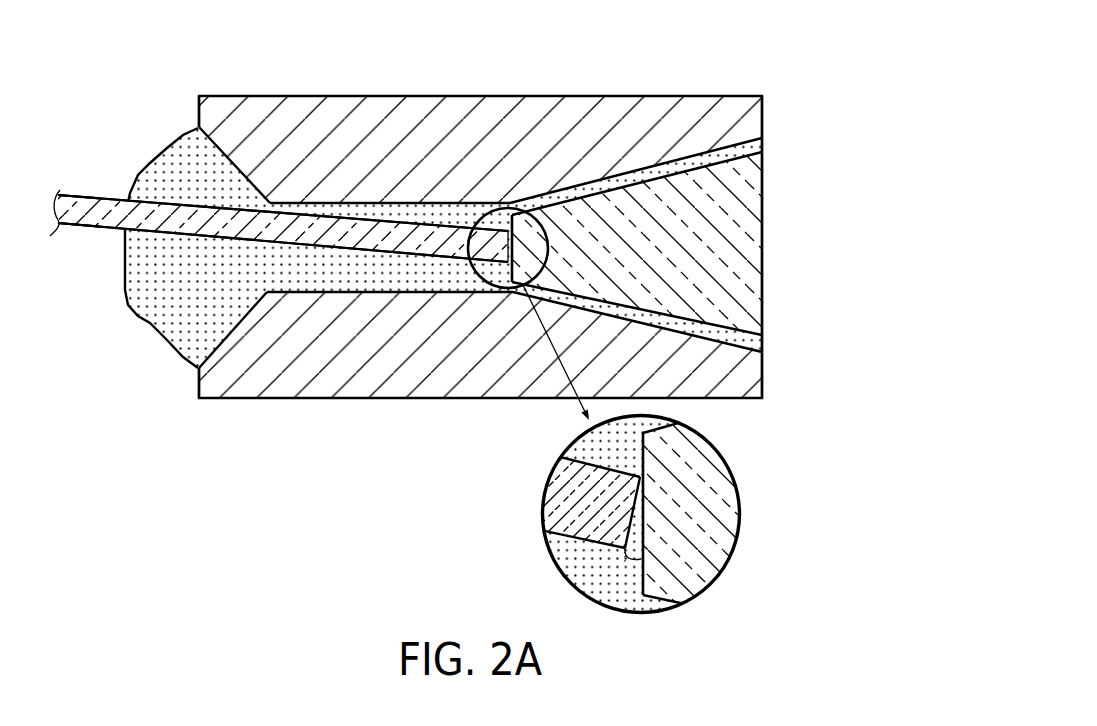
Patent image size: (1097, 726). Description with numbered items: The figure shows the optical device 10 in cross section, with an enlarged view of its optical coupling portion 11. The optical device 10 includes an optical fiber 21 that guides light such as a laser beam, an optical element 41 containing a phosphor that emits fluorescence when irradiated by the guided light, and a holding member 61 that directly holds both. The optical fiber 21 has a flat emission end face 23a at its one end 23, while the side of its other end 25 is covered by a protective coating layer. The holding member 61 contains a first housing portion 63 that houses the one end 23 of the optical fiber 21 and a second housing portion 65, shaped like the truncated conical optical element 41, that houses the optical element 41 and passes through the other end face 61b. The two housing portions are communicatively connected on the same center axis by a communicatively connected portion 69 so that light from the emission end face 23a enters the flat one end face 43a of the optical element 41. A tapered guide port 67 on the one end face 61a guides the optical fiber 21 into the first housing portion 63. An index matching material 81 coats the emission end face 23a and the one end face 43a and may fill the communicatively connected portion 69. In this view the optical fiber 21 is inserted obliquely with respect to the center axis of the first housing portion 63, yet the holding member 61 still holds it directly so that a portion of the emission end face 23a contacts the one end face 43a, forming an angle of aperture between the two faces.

The optical device 10 is at (440, 72).
The optical coupling portion 11 is at (533, 461).
The optical fiber 21 is at (226, 261).
The one end of the optical fiber 23 is at (450, 240).
The emission end face 23a is at (505, 262).
The other end of the optical fiber 25 is at (80, 200).
The optical element 41 is at (698, 262).
The one end face of the optical element 43a is at (512, 282).
The holding member 61 is at (575, 142).
The one end face of the holding member 61a is at (197, 108).
The other end face of the holding member 61b is at (762, 118).
The first housing portion 63 is at (341, 203).
The second housing portion 65 is at (684, 160).
The guide port 67 is at (256, 160).
The communicatively connected portion 69 is at (505, 196).
The index matching material 81 is at (162, 327).